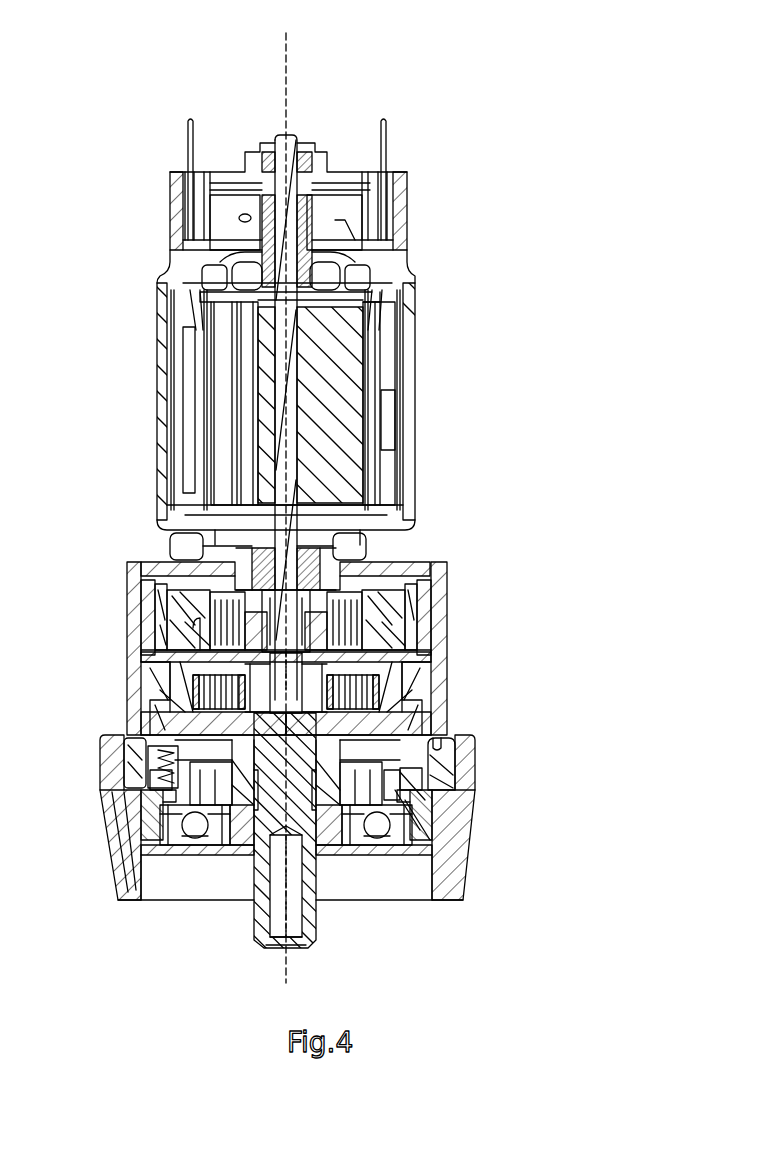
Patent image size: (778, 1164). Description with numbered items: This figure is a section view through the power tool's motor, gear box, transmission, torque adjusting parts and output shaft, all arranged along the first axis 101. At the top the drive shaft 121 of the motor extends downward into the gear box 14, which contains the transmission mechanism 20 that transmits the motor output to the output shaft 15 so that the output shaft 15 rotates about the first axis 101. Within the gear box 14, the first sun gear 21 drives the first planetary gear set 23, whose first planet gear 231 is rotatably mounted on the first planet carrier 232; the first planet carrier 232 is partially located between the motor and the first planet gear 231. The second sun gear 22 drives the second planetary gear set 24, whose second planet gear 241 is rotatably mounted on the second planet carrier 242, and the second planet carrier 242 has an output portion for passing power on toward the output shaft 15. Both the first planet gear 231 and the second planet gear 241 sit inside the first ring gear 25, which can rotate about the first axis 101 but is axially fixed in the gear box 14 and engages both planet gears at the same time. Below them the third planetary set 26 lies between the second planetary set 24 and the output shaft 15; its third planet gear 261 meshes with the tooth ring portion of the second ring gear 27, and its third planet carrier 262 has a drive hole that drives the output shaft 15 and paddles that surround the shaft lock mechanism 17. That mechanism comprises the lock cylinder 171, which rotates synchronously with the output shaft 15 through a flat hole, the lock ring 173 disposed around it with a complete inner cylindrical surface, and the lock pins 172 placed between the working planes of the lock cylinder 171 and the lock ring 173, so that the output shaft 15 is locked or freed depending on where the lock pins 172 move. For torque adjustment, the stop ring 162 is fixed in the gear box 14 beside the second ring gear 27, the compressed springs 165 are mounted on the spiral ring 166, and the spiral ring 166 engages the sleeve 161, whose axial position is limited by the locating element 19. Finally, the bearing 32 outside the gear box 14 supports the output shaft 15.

The first axis 101 is at (289, 70).
The drive shaft 121 is at (292, 410).
The gear box 14 is at (176, 568).
The first sun gear 21 is at (410, 562).
The first planetary gear set 23 is at (415, 582).
The first planet carrier 232 is at (178, 588).
The first planet gear 231 is at (178, 612).
The first ring gear 25 is at (168, 632).
The second planet gear 241 is at (420, 603).
The second sun gear 22 is at (425, 628).
The second planetary gear set 24 is at (428, 648).
The stop ring 162 is at (432, 660).
The second planet carrier 242 is at (168, 658).
The second ring gear 27 is at (166, 690).
The third planet gear 261 is at (425, 692).
The third planet carrier 262 is at (158, 720).
The transmission mechanism 20 is at (428, 714).
The third planetary set 26 is at (124, 739).
The lock pins 172 is at (445, 742).
The shaft lock mechanism 17 is at (456, 760).
The compressed springs 165 is at (163, 764).
The bearing 32 is at (145, 822).
The lock ring 173 is at (438, 790).
The lock cylinder 171 is at (440, 806).
The spiral ring 166 is at (140, 800).
The locating element 19 is at (440, 836).
The sleeve 161 is at (450, 888).
The output shaft 15 is at (318, 926).